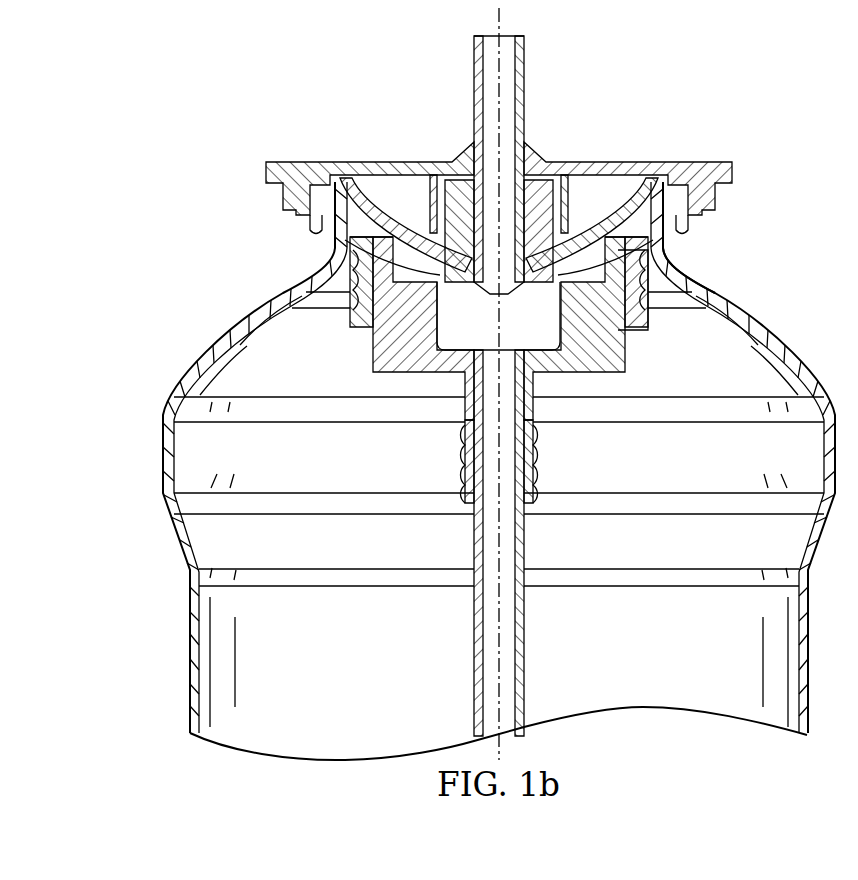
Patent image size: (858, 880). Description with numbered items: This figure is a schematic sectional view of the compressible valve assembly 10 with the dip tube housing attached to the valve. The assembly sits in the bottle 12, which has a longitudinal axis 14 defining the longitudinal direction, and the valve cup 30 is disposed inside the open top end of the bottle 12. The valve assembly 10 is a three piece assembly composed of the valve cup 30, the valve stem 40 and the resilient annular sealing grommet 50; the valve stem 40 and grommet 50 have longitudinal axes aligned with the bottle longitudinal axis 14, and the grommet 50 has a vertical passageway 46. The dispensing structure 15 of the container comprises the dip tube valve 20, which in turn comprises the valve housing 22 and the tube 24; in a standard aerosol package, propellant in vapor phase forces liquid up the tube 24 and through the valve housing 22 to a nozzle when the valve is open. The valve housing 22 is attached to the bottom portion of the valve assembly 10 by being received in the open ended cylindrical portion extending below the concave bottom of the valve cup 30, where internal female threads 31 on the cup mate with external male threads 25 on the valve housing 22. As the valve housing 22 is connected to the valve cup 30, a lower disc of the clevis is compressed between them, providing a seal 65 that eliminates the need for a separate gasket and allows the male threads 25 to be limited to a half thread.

The valve assembly 10 is at (370, 114).
The bottle 12 is at (216, 309).
The longitudinal axis 14 is at (501, 11).
The dispensing structure 15 is at (460, 410).
The dip tube valve 20 is at (366, 361).
The valve housing 22 is at (620, 336).
The tube 24 is at (527, 615).
The external male threads 25 is at (660, 302).
The valve cup 30 is at (665, 168).
The internal female threads 31 is at (674, 248).
The valve stem 40 is at (474, 92).
The vertical passageway 46 is at (513, 95).
The resilient annular sealing grommet 50 is at (444, 214).
The seal 65 is at (440, 297).